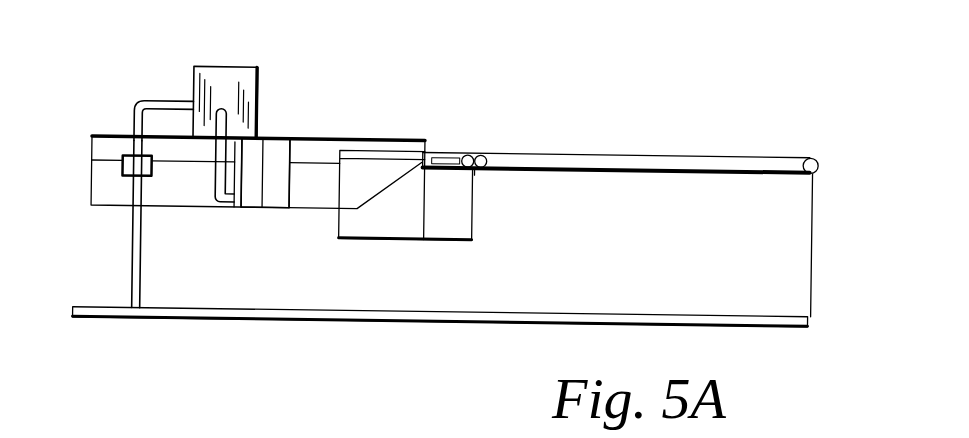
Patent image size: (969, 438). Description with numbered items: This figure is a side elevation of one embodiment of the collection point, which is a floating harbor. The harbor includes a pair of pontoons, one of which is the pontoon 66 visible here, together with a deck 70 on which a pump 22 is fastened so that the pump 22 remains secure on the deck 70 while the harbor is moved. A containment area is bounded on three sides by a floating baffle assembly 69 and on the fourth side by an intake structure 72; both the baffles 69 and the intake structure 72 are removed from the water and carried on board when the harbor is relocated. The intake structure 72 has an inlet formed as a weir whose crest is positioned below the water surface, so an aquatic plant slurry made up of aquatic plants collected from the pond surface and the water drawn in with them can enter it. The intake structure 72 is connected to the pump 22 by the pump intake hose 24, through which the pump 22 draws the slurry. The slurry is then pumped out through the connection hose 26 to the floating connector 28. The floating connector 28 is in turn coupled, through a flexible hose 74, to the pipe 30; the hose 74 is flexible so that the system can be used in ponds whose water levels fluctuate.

The pump 22 is at (203, 65).
The pump intake hose 24 is at (227, 208).
The connection hose 26 is at (152, 98).
The floating connector 28 is at (124, 165).
The pipe 30 is at (218, 312).
The pontoon 66 is at (410, 140).
The floating baffle assembly 69 is at (778, 162).
The deck 70 is at (279, 136).
The intake structure 72 is at (280, 183).
The flexible hose 74 is at (144, 256).